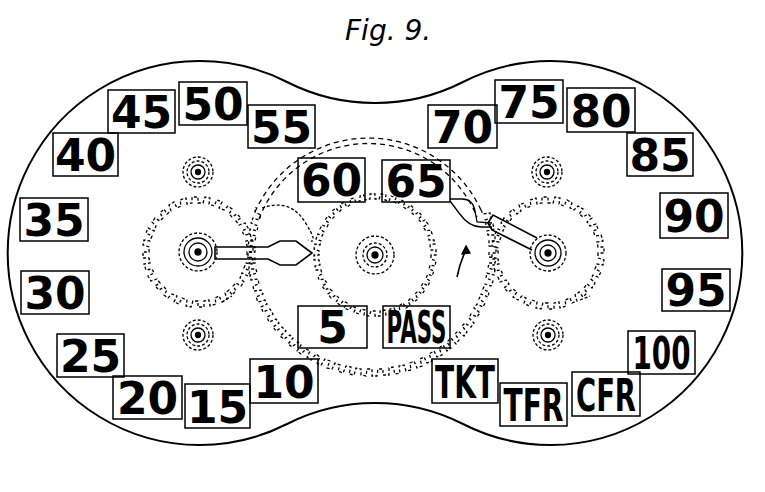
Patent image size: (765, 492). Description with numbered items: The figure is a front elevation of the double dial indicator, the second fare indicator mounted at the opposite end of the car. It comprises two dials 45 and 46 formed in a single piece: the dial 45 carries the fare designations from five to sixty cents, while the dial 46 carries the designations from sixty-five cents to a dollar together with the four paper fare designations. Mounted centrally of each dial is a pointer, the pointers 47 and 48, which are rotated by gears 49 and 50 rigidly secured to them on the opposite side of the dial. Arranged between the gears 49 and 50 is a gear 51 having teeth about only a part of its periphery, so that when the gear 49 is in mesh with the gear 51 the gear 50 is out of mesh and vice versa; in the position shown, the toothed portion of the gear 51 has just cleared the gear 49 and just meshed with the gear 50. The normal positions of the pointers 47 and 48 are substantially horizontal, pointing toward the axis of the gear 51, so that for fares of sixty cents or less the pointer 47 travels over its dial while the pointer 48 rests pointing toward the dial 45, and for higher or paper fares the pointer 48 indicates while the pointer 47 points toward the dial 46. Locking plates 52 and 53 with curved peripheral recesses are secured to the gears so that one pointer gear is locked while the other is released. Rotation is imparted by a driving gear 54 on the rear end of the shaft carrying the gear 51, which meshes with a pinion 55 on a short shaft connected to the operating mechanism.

The dial 45 is at (168, 428).
The dial 46 is at (596, 428).
The pointer 47 is at (228, 250).
The pointer 48 is at (458, 206).
The gear 49 is at (143, 253).
The gear 50 is at (604, 262).
The gear 51 is at (382, 379).
The locking plate 52 is at (226, 306).
The locking plate 53 is at (362, 127).
The driving gear 54 is at (430, 273).
The pinion 55 is at (287, 222).